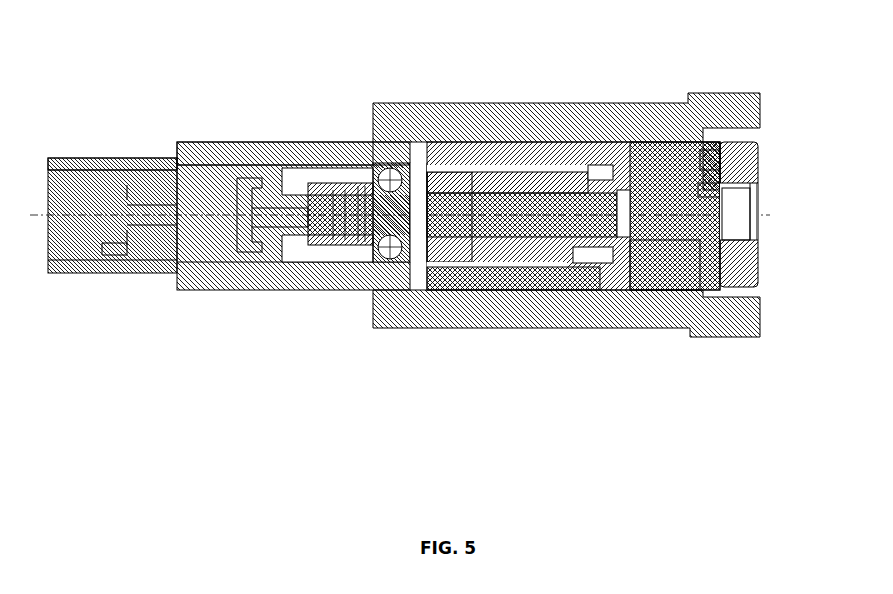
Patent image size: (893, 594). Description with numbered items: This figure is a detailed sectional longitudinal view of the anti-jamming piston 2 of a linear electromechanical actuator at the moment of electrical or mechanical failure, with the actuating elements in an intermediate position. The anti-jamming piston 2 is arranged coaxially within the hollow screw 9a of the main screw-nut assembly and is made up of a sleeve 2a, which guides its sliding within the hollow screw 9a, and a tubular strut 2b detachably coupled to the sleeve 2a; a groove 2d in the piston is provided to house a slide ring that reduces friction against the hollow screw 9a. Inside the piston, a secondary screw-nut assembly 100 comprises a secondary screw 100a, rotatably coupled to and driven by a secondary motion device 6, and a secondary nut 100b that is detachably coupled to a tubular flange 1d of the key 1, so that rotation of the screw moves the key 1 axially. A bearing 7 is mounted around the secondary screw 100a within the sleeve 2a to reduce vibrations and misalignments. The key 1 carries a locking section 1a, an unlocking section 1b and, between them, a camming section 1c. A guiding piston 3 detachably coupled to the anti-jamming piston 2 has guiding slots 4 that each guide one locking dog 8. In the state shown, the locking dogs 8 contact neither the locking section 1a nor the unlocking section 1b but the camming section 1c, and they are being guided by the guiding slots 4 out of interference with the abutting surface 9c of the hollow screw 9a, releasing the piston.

The key 1 is at (652, 197).
The locking section 1a is at (663, 247).
The unlocking section 1b is at (720, 237).
The camming section 1c is at (705, 190).
The tubular flange 1d is at (602, 250).
The anti-jamming piston 2 is at (225, 262).
The sleeve 2a is at (312, 147).
The tubular strut 2b is at (162, 243).
The groove 2d is at (543, 276).
The guiding piston 3 is at (737, 162).
The guiding slots 4 is at (715, 160).
The secondary motion device 6 is at (108, 163).
The bearing 7 is at (380, 258).
The locking dogs 8 is at (708, 143).
The hollow screw 9a is at (550, 118).
The abutting surface 9c is at (702, 297).
The secondary screw-nut assembly 100 is at (500, 223).
The secondary screw 100a is at (427, 207).
The secondary nut 100b is at (474, 162).